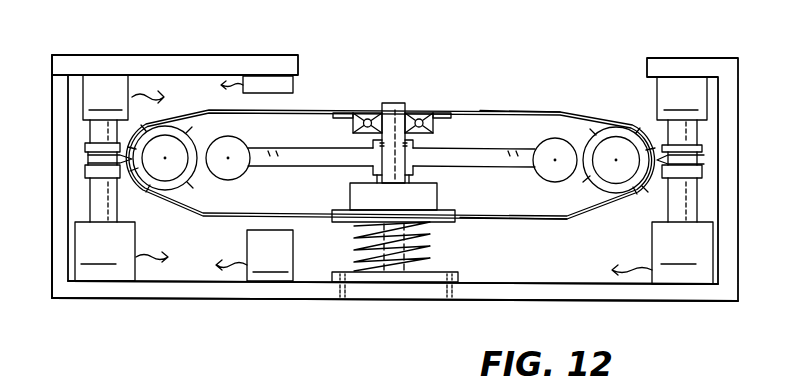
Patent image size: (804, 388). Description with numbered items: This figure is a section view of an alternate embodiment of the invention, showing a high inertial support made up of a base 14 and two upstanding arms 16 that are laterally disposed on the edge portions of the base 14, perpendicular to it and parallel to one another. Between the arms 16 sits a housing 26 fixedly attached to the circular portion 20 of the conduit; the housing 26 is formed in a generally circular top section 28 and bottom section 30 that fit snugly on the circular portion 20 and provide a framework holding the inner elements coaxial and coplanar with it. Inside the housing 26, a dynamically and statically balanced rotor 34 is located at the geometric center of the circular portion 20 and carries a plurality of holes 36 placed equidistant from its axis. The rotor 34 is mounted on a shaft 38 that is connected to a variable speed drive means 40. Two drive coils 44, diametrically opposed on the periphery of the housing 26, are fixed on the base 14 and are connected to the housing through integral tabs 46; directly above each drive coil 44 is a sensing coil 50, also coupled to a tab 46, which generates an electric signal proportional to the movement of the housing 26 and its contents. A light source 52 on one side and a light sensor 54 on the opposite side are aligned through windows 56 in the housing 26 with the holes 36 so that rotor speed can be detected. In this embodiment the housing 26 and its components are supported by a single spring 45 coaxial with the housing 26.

The base 14 is at (523, 298).
The upstanding arms 16 is at (57, 124).
The circular portion 20 is at (641, 127).
The housing 26 is at (553, 112).
The top section 28 is at (489, 109).
The bottom section 30 is at (516, 224).
The rotor 34 is at (338, 157).
The holes 36 is at (513, 168).
The shaft 38 is at (394, 108).
The variable speed drive means 40 is at (425, 199).
The drive coils 44 is at (394, 231).
The spring 45 is at (427, 238).
The tabs 46 is at (86, 161).
The sensing coil 50 is at (395, 110).
The light source 52 is at (254, 255).
The light sensor 54 is at (255, 84).
The windows 56 is at (275, 111).